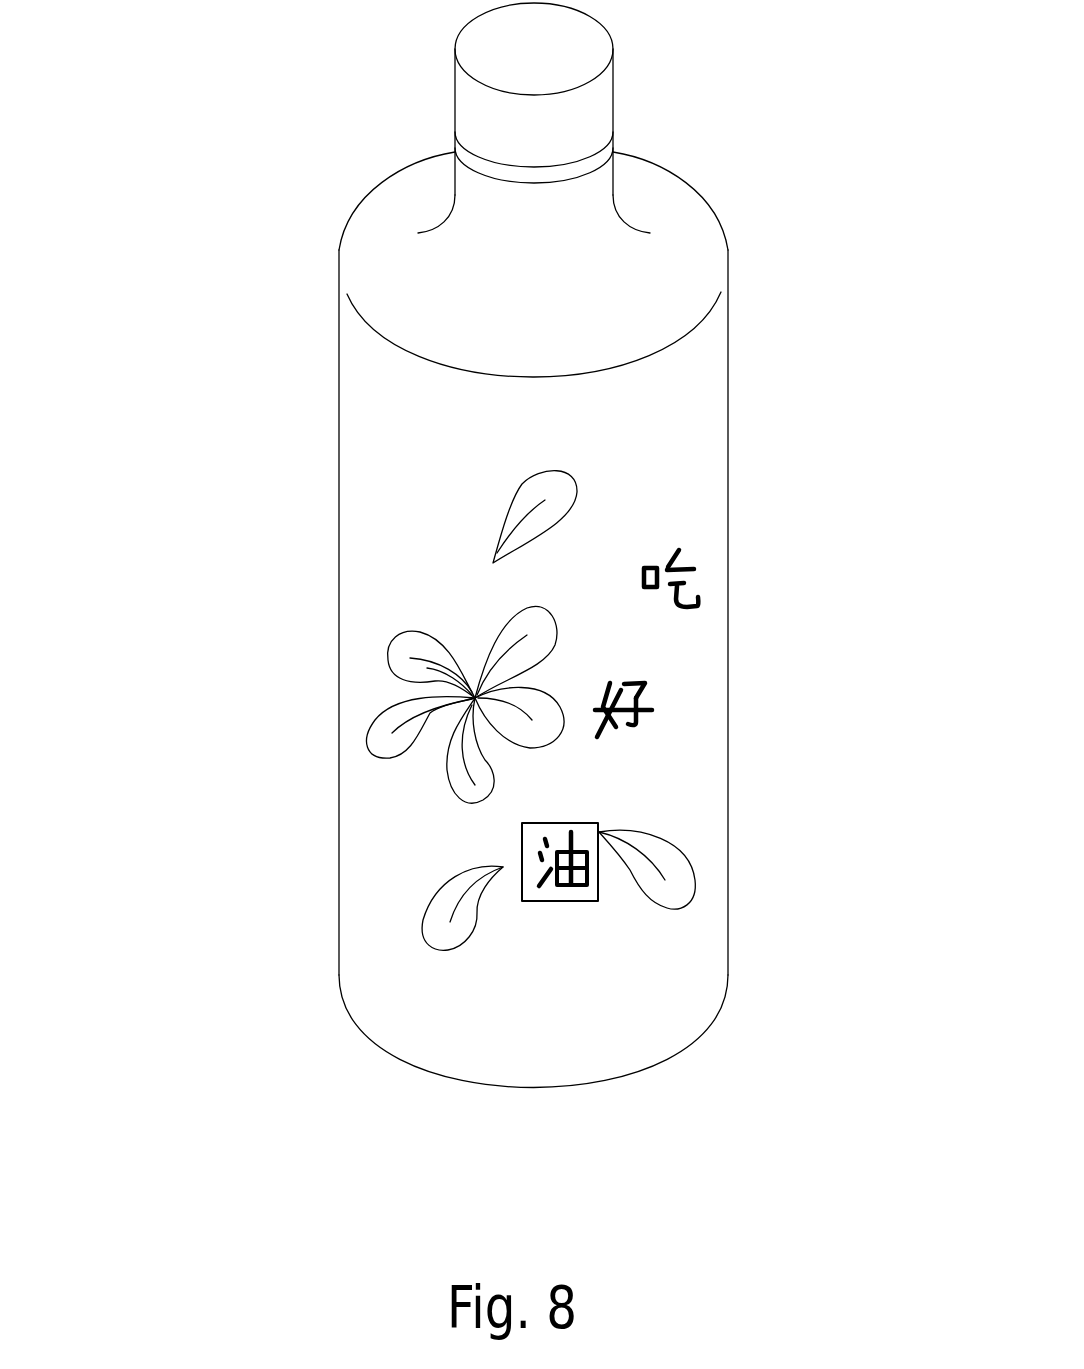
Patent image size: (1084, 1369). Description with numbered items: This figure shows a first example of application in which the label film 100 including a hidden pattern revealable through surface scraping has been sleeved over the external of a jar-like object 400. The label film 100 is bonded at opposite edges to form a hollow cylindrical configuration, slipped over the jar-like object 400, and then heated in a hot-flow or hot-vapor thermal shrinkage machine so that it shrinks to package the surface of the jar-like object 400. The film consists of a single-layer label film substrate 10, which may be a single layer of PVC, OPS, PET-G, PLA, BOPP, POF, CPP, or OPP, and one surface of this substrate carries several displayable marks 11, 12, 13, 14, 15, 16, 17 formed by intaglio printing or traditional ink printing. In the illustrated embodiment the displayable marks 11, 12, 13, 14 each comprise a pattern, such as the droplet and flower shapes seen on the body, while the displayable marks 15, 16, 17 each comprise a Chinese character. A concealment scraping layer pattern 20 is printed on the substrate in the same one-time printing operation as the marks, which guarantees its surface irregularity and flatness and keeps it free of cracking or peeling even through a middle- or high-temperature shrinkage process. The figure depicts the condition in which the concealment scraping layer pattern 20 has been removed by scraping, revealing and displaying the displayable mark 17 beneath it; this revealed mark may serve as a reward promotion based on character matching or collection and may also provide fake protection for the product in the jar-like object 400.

The label film 100 is at (243, 443).
The jar-like object 400 is at (663, 212).
The single-layer label film substrate 10 is at (723, 415).
The displayable mark 11 is at (545, 500).
The displayable mark 12 is at (427, 668).
The displayable mark 13 is at (462, 929).
The displayable mark 14 is at (670, 858).
The displayable mark 15 is at (678, 558).
The displayable mark 16 is at (647, 690).
The displayable mark 17 is at (568, 888).
The concealment scraping layer pattern 20 is at (522, 902).